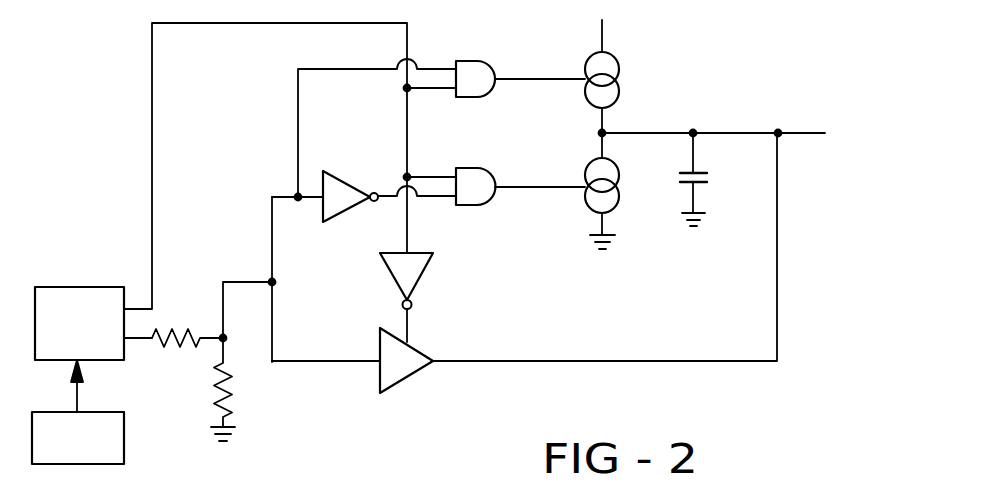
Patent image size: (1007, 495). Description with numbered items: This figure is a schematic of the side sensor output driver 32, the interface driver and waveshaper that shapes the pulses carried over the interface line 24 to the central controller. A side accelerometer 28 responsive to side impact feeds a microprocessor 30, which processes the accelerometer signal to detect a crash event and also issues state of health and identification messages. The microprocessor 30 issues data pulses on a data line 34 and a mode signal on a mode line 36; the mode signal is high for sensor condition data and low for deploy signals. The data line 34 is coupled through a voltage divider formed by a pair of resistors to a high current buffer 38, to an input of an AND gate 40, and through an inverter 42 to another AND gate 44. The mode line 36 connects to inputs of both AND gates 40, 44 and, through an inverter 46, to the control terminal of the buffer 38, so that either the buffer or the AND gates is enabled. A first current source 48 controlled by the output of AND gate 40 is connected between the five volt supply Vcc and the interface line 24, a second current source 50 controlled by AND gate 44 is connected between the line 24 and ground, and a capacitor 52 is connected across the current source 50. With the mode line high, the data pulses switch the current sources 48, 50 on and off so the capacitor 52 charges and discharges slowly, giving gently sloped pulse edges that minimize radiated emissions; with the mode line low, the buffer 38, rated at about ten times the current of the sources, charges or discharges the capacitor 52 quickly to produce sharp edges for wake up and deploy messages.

The interface line 24 is at (805, 133).
The side accelerometer 28 is at (103, 465).
The microprocessor 30 is at (97, 287).
The output driver 32 is at (746, 389).
The data line 34 is at (133, 343).
The mode line 36 is at (153, 145).
The high current buffer 38 is at (402, 380).
The AND gate 40 is at (493, 67).
The inverter 42 is at (346, 212).
The AND gate 44 is at (493, 176).
The inverter 46 is at (420, 272).
The first current source 48 is at (620, 68).
The second current source 50 is at (620, 175).
The capacitor 52 is at (703, 183).